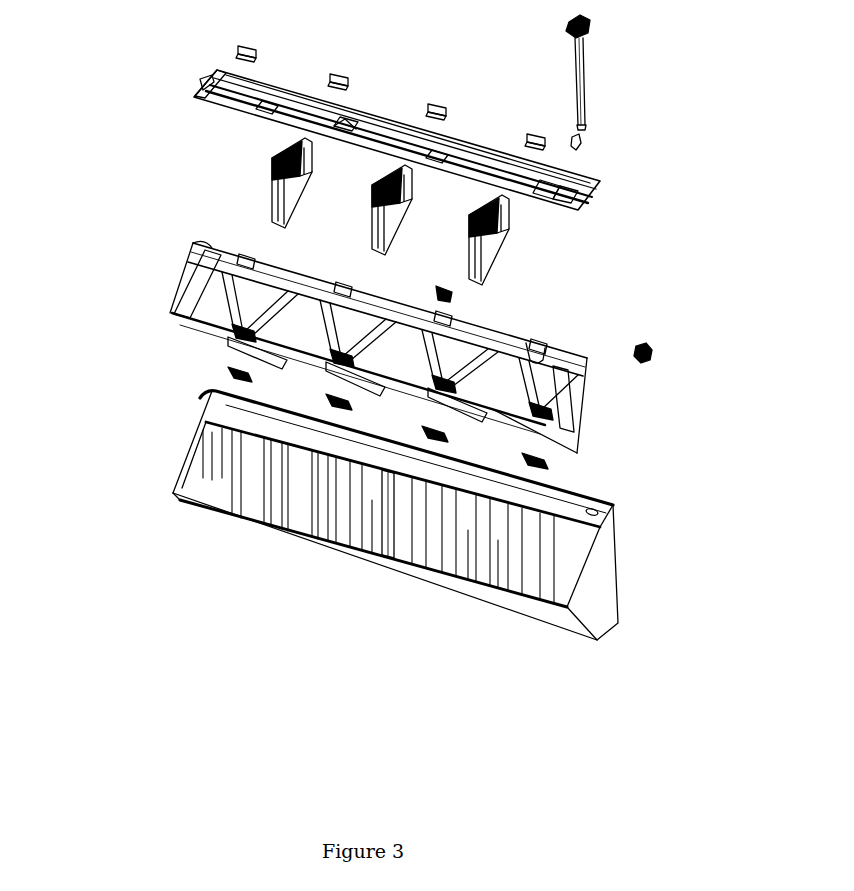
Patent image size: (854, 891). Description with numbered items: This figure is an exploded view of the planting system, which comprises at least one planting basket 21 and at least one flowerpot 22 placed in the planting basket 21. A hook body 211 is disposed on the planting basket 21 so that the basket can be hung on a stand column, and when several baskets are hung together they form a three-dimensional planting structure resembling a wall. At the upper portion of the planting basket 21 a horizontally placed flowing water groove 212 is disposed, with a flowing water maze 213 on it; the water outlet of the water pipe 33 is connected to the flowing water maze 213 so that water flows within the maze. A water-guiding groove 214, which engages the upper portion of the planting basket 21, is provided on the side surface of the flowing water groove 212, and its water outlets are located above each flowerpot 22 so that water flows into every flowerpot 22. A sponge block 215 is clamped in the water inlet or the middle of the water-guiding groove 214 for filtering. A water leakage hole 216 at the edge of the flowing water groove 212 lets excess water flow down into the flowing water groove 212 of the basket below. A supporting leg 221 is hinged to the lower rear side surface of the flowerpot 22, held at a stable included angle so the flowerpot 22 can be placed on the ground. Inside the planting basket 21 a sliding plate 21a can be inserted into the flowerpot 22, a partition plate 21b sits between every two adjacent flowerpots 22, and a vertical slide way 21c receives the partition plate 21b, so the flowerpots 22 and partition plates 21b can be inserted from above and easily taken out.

The planting basket 21 is at (620, 568).
The sliding plate 21a is at (450, 580).
The partition plate 21b is at (510, 238).
The vertical slide way 21c is at (385, 512).
The flowerpot 22 is at (210, 300).
The water pipe 33 is at (583, 43).
The hook body 211 is at (652, 354).
The flowing water groove 212 is at (258, 112).
The flowing water maze 213 is at (352, 122).
The water-guiding groove 214 is at (538, 352).
The sponge block 215 is at (260, 49).
The water leakage hole 216 is at (210, 74).
The supporting leg 221 is at (570, 471).